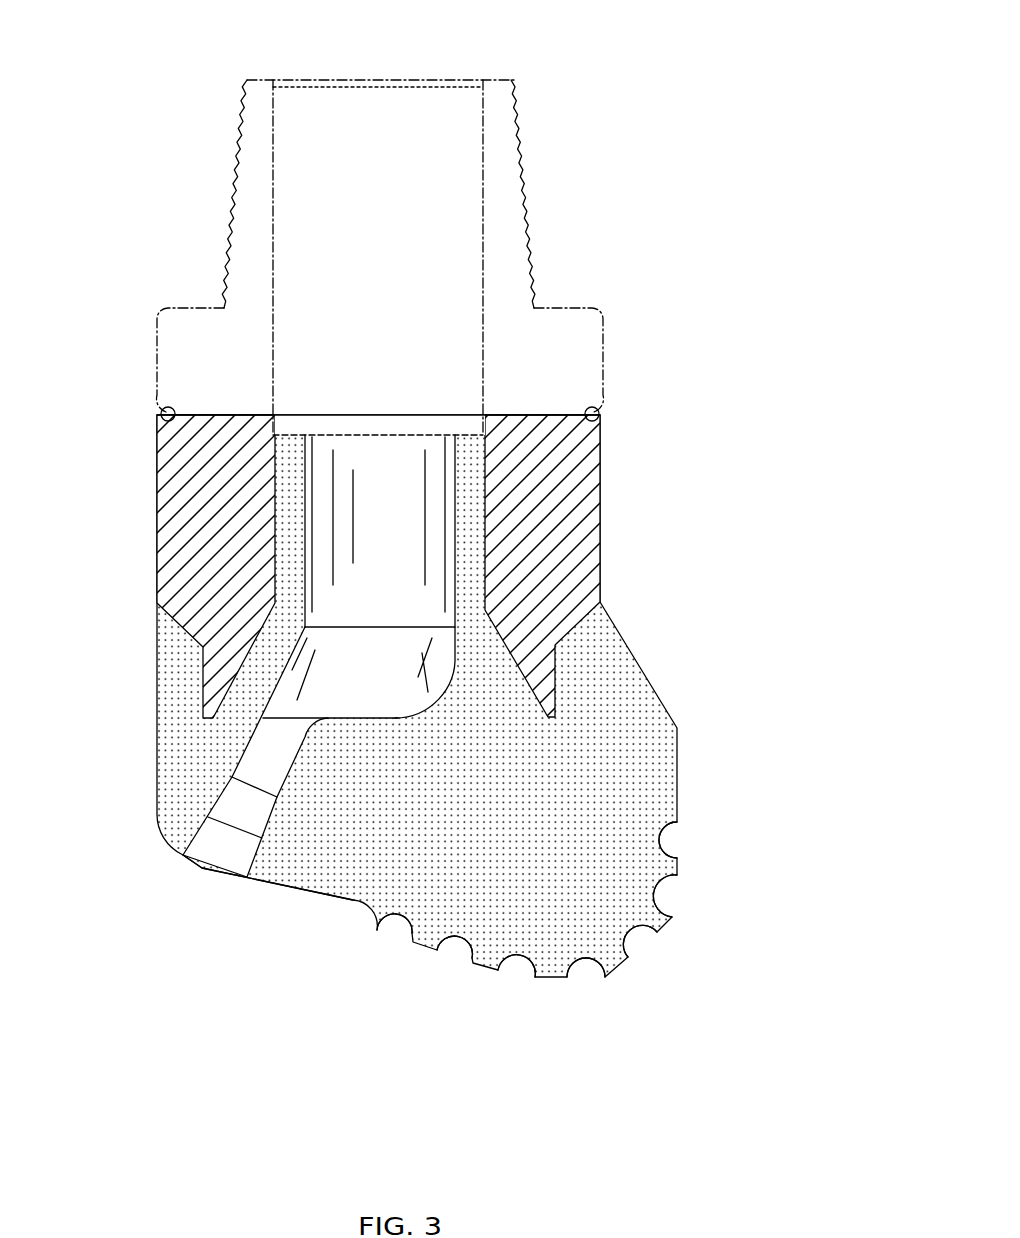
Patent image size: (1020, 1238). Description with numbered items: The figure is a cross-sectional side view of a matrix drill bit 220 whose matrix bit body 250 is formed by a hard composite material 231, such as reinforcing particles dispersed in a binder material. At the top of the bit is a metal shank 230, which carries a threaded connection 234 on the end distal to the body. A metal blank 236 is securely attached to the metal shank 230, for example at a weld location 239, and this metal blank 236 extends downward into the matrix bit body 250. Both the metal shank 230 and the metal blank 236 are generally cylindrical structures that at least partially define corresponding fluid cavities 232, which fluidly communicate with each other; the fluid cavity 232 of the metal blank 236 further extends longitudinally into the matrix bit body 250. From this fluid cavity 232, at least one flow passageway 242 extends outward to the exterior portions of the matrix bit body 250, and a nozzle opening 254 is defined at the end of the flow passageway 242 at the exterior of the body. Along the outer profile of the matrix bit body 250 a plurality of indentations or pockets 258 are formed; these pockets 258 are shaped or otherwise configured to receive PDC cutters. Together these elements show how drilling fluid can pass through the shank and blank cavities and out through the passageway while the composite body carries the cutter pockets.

The matrix drill bit 220 is at (697, 56).
The metal shank 230 is at (642, 346).
The hard composite material 231 is at (543, 852).
The fluid cavity 232 is at (398, 226).
The threaded connection 234 is at (240, 163).
The metal blank 236 is at (233, 533).
The weld location 239 is at (600, 419).
The flow passageway 242 is at (243, 861).
The matrix bit body 250 is at (128, 669).
The nozzle opening 254 is at (238, 873).
The pockets 258 is at (674, 853).